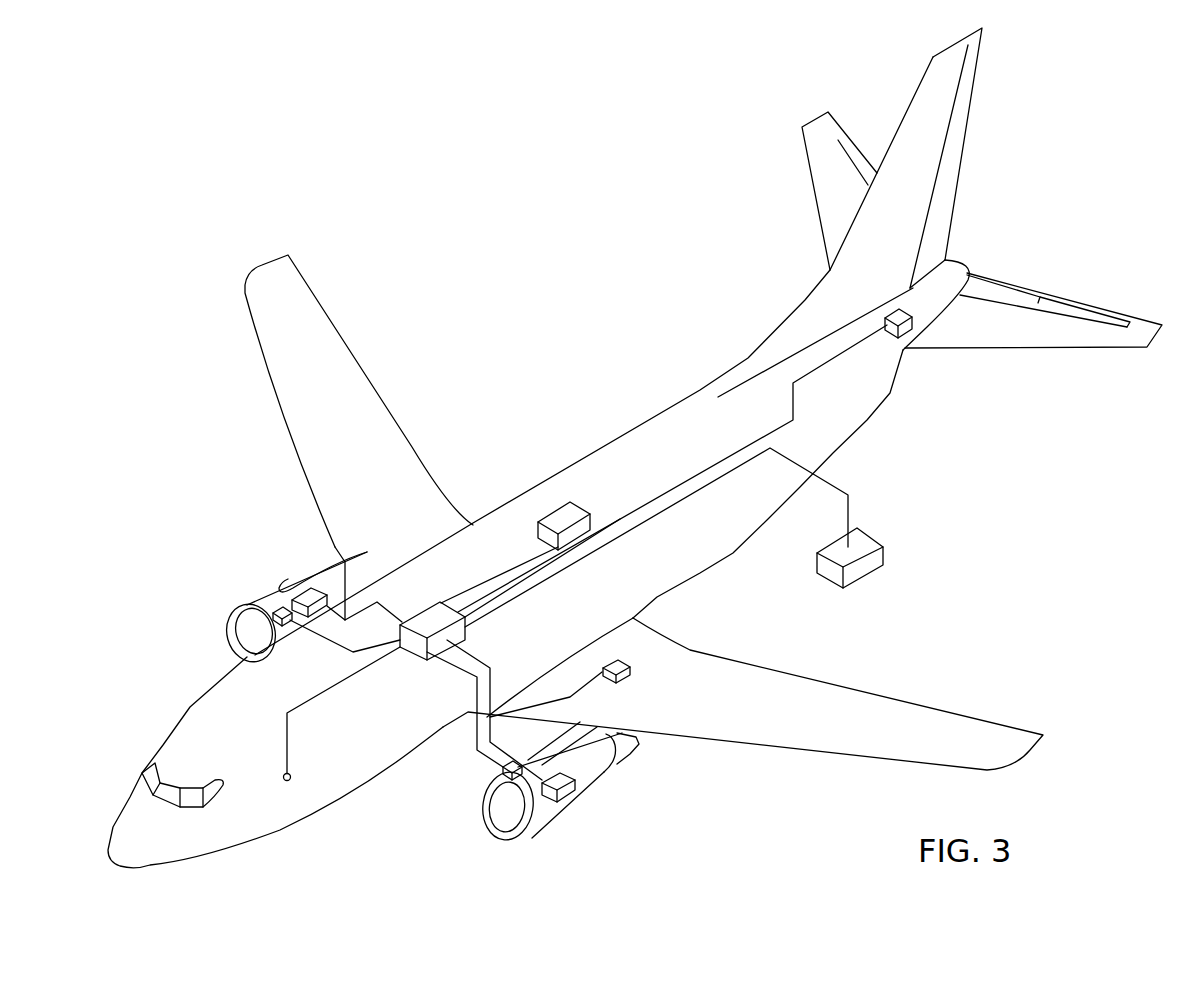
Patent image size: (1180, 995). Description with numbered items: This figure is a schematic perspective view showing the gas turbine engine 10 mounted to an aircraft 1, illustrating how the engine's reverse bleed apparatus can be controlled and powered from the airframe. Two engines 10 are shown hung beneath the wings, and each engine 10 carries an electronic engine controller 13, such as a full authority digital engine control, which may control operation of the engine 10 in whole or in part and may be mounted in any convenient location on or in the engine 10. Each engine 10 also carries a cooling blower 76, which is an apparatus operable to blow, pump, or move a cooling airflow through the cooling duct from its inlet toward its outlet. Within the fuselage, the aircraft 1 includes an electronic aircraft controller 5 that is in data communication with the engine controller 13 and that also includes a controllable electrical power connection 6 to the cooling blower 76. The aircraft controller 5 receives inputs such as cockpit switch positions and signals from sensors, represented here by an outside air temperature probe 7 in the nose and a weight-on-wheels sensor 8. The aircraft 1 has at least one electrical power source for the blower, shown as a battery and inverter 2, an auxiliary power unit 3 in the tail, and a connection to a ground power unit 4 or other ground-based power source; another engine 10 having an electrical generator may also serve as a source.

The aircraft 1 is at (558, 298).
The battery and inverter 2 is at (566, 513).
The auxiliary power unit 3 is at (900, 328).
The connection to a ground power unit 4 is at (868, 542).
The electronic aircraft controller 5 is at (437, 612).
The controllable electrical power connection 6 is at (477, 745).
The outside air temperature (OAT) probe 7 is at (292, 778).
The weight-on-wheels sensor 8 is at (620, 660).
The gas turbine engine 10 is at (203, 638).
The electronic engine controller 13 is at (290, 602).
The cooling blower 76 is at (273, 610).